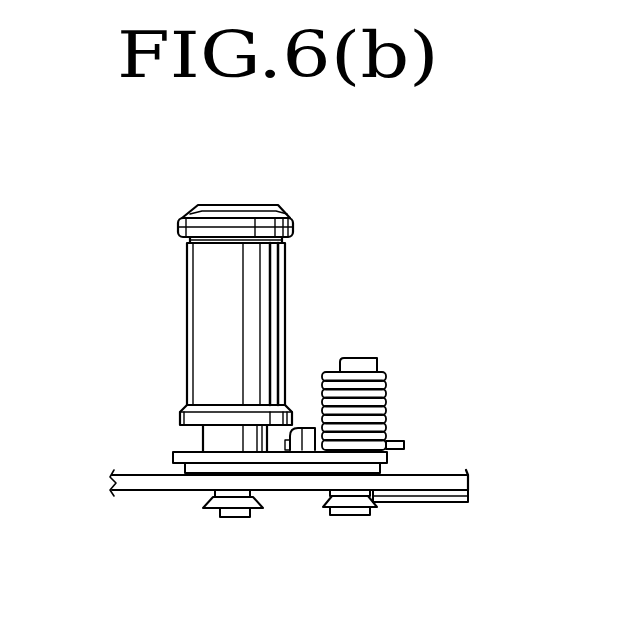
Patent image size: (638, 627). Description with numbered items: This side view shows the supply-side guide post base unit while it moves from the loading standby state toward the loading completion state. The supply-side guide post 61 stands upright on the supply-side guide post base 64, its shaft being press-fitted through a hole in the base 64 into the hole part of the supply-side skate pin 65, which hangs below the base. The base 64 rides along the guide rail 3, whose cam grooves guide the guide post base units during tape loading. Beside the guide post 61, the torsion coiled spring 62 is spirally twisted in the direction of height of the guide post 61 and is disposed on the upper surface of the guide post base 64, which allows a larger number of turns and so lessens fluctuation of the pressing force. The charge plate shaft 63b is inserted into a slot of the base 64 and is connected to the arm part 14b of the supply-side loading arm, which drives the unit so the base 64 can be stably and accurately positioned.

The guide rail 3 is at (152, 483).
The arm part 14b is at (458, 503).
The supply-side guide post 61 is at (202, 300).
The torsion coiled spring 62 is at (385, 403).
The shaft of the charge plate 63b is at (378, 502).
The supply-side guide post base 64 is at (172, 455).
The supply-side skate pin 65 is at (205, 495).